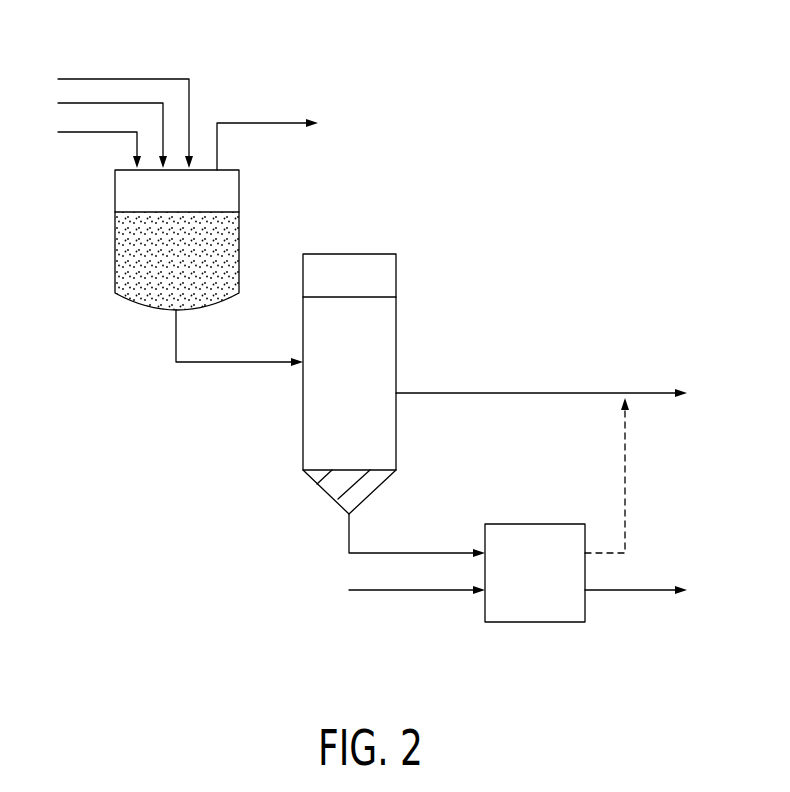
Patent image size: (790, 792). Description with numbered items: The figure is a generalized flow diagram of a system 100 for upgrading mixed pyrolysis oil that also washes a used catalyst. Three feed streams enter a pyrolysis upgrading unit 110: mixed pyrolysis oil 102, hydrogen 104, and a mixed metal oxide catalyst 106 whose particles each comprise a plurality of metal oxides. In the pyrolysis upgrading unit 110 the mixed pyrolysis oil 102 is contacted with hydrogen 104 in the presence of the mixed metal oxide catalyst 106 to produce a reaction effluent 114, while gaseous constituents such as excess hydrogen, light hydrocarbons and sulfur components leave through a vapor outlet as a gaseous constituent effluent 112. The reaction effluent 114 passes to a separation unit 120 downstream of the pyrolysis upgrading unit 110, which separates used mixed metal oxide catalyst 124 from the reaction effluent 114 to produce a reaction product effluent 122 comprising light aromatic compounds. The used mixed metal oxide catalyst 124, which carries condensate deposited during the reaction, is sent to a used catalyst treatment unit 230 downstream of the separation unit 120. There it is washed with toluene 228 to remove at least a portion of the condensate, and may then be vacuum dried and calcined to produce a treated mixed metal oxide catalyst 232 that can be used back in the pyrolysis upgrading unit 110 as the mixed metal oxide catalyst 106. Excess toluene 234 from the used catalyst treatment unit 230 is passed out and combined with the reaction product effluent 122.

The system 100 is at (526, 138).
The mixed pyrolysis oil 102 is at (83, 134).
The hydrogen 104 is at (117, 101).
The mixed metal oxide catalyst 106 is at (155, 78).
The pyrolysis upgrading unit 110 is at (117, 242).
The gaseous constituent effluent 112 is at (250, 122).
The reaction effluent 114 is at (253, 360).
The separation unit 120 is at (351, 253).
The reaction product effluent 122 is at (492, 392).
The used mixed metal oxide catalyst 124 is at (432, 551).
The toluene 228 is at (412, 592).
The used catalyst treatment unit 230 is at (535, 523).
The treated mixed metal oxide catalyst 232 is at (638, 592).
The excess toluene 234 is at (630, 503).